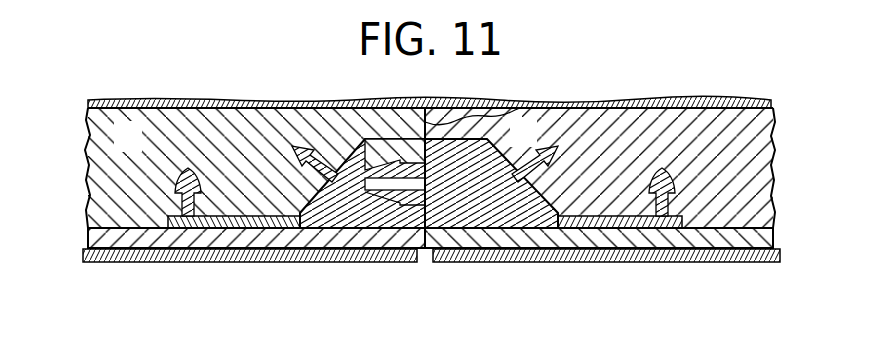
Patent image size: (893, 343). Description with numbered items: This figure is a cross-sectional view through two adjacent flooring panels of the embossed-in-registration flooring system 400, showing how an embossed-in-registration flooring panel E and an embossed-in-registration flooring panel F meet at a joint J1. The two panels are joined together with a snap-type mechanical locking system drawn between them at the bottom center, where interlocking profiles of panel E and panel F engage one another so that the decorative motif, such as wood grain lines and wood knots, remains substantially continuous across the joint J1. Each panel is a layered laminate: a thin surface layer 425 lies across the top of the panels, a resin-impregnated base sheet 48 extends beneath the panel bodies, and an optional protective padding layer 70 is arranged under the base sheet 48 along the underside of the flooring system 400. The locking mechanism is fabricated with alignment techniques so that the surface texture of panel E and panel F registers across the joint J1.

The top cover layer 425 is at (89, 107).
The base sheet 48 is at (88, 242).
The protective padding layer 70 is at (118, 263).
The embossed-in-registration flooring system 400 is at (639, 80).
The joint line J1 is at (520, 108).
The embossed-in-registration flooring panel E is at (256, 168).
The embossed-in-registration flooring panel F is at (599, 168).